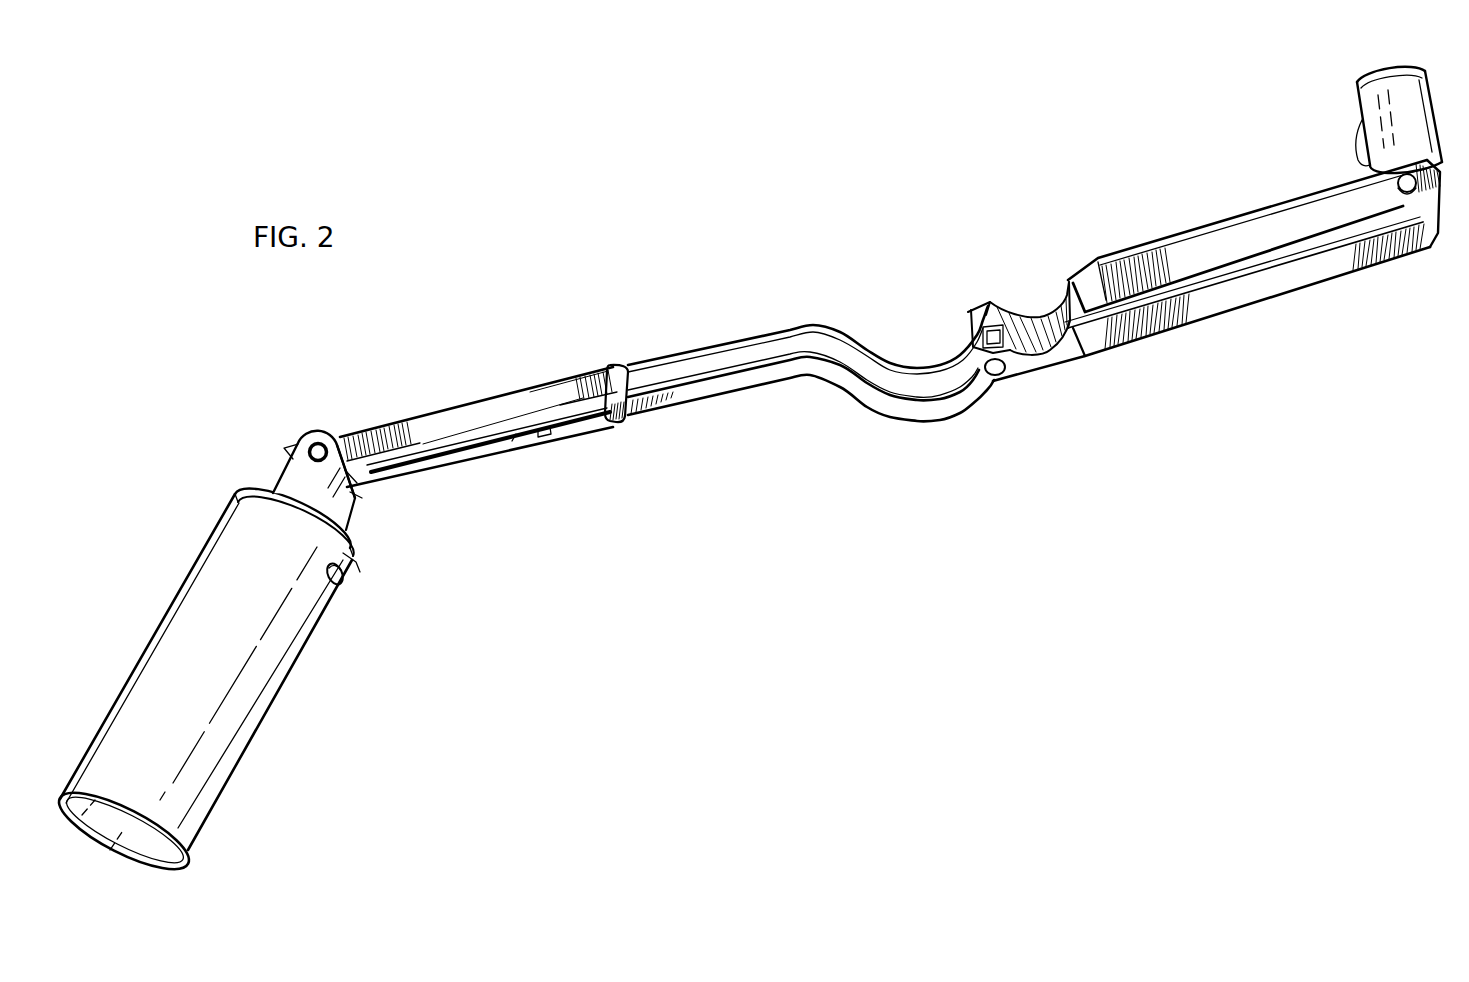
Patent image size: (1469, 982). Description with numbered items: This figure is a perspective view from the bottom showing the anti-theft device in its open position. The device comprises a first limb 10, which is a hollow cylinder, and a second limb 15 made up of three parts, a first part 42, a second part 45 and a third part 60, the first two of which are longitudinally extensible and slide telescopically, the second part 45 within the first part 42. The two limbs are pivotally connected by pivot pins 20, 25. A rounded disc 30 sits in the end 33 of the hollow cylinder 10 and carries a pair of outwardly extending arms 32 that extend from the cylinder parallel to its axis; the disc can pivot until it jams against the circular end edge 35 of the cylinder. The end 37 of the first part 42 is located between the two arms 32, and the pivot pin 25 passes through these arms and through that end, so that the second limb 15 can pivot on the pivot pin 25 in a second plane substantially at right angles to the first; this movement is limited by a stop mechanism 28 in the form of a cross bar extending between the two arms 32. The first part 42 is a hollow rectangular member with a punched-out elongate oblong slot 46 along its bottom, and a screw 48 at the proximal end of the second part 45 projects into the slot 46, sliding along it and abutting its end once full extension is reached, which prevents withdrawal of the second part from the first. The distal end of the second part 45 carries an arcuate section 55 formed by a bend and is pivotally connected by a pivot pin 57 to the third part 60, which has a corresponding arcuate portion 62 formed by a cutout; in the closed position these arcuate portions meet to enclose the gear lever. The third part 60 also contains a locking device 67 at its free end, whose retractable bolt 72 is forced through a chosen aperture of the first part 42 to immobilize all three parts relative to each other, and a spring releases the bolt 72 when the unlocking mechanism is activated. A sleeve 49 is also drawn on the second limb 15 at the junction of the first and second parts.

The first limb 10 is at (205, 832).
The second limb 15 is at (645, 330).
The pivot pin 20 is at (340, 584).
The pivot pin 25 is at (318, 443).
The stop mechanism 28 is at (360, 497).
The rounded disc 30 is at (250, 486).
The outwardly extending arms 32 is at (290, 464).
The end of the hollow cylinder 33 is at (201, 550).
The circular end edge 35 is at (343, 553).
The end of the first part 37 is at (297, 440).
The first part 42 is at (412, 414).
The second part 45 is at (780, 383).
The slot 46 is at (447, 467).
The screw 48 is at (550, 440).
The sleeve 49 is at (607, 430).
The arcuate section 55 is at (920, 360).
The pivot pin 57 is at (1000, 376).
The third part 60 is at (1200, 327).
The arcuate portion 62 is at (1037, 317).
The locking device 67 is at (1360, 96).
The retractable bolt 72 is at (1393, 183).